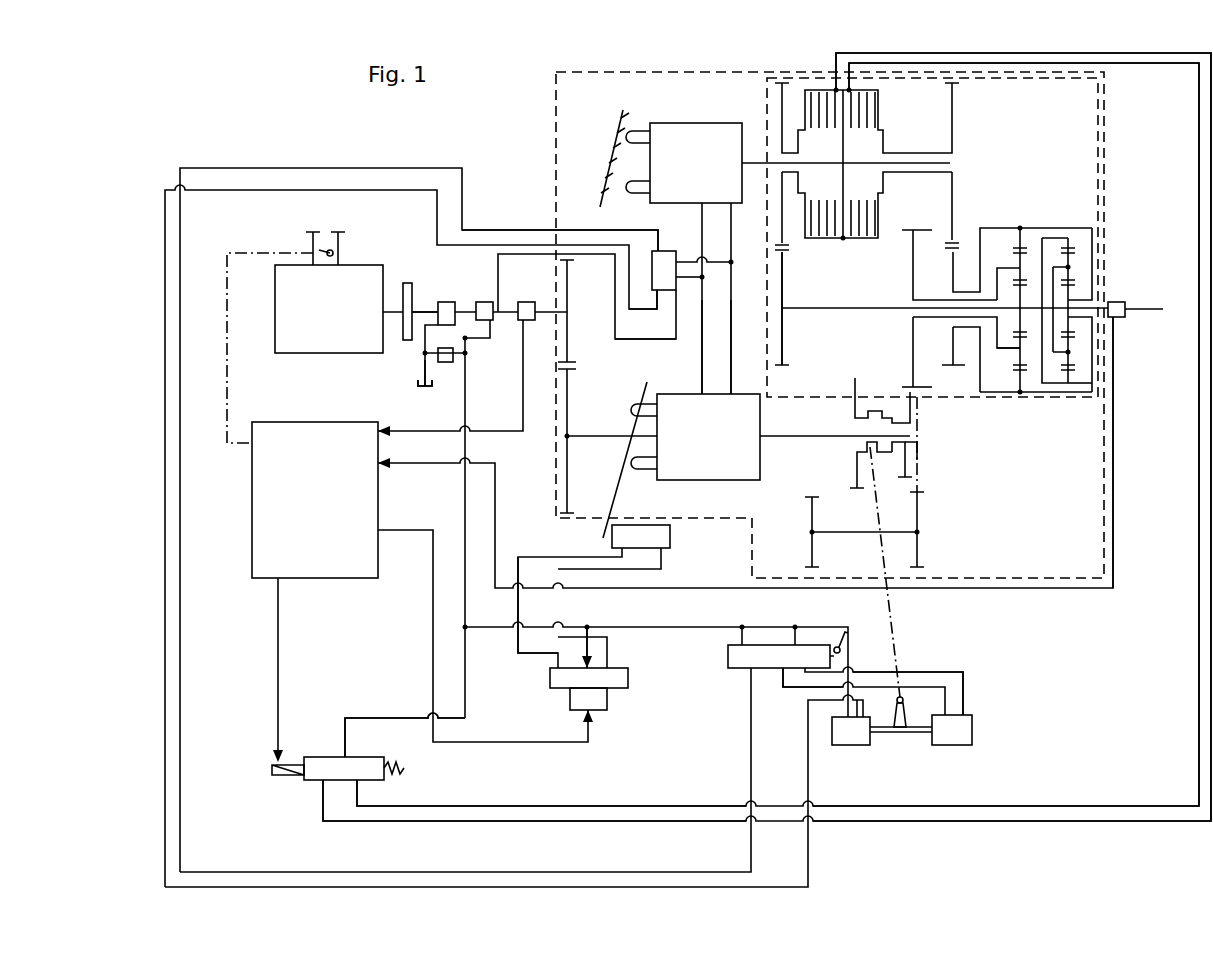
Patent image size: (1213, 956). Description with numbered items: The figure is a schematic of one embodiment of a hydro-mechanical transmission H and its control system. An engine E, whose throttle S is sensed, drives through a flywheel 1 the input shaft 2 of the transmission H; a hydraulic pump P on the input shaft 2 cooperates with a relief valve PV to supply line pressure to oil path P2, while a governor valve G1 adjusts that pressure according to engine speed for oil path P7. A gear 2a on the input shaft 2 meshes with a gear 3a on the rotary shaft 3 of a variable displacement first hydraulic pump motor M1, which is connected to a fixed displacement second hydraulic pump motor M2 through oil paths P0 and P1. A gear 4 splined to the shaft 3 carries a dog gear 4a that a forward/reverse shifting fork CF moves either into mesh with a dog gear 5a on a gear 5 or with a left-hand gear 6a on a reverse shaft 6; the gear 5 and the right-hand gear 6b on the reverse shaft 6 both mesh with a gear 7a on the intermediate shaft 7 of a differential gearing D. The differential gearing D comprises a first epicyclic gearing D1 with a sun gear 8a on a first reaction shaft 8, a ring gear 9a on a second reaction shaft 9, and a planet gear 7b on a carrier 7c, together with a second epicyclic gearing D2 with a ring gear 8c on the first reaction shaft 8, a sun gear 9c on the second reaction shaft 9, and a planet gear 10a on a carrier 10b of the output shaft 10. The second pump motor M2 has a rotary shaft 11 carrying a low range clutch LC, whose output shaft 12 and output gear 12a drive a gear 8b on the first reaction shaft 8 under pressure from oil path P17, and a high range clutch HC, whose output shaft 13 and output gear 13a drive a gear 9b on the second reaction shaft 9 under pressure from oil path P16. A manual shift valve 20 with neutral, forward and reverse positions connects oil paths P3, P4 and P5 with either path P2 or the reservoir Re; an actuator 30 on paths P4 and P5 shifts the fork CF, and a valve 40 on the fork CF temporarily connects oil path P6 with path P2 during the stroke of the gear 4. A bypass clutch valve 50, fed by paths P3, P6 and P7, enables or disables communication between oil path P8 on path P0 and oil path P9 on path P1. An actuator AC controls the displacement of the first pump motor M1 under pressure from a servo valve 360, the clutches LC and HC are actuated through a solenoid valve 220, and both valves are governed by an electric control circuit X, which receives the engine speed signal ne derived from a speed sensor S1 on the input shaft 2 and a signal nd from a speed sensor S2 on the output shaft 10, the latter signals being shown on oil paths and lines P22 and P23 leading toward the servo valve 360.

The flywheel 1 is at (406, 283).
The input shaft 2 is at (425, 311).
The rotary shaft 3 is at (596, 436).
The gear 4 is at (850, 485).
The gear 5 is at (905, 480).
The reverse shaft 6 is at (852, 532).
The intermediate shaft 7 is at (930, 317).
The first reaction shaft 8 is at (873, 308).
The second reaction shaft 9 is at (958, 327).
The output shaft 10 is at (1158, 309).
The rotary shaft 11 is at (945, 158).
The output shaft 12 is at (800, 175).
The output shaft 13 is at (908, 170).
The manual shift valve 20 is at (788, 651).
The actuator 30 is at (921, 730).
The valve 40 is at (851, 731).
The bypass clutch valve 50 is at (664, 251).
The solenoid valve 220 is at (338, 769).
The servo valve 360 is at (607, 705).
The gear 2a is at (574, 362).
The gear 3a is at (576, 369).
The dog gear 4a is at (882, 408).
The dog gear 5a is at (917, 448).
The left-hand gear 6a is at (805, 566).
The right-hand gear 6b is at (925, 498).
The gear 7a is at (905, 385).
The planet gear 7b is at (1012, 366).
The carrier 7c is at (1003, 268).
The sun gear 8a is at (990, 292).
The gear 8b is at (786, 268).
The ring gear 8c is at (1068, 383).
The ring gear 9a is at (1020, 380).
The gear 9b is at (948, 253).
The sun gear 9c is at (1078, 332).
The planet gear 10a is at (1075, 253).
The carrier 10b is at (1078, 365).
The output gear 12a is at (790, 248).
The output gear 13a is at (958, 244).
The engine E is at (340, 323).
The electric control circuit X is at (324, 515).
The engine throttle S is at (340, 244).
The hydraulic pump P is at (447, 302).
The governor valve G1 is at (484, 302).
The speed sensor S1 is at (530, 320).
The speed sensor S2 is at (1125, 306).
The relief valve PV is at (446, 362).
The reservoir Re is at (420, 374).
The first hydraulic pump motor M1 is at (721, 450).
The second hydraulic pump motor M2 is at (711, 177).
The low range clutch LC is at (822, 110).
The high range clutch HC is at (878, 105).
The actuator AC is at (641, 537).
The forward/reverse shifting fork CF is at (904, 700).
The hydro-mechanical transmission H is at (556, 150).
The differential gearing D is at (988, 397).
The first epicyclic gearing D1 is at (1020, 228).
The second epicyclic gearing D2 is at (1062, 230).
The engine speed potential ne is at (392, 419).
The drive speed signal nd is at (392, 450).
The oil path P0 is at (715, 347).
The oil path P1 is at (731, 340).
The oil path P2 is at (383, 718).
The oil path P3 is at (583, 230).
The oil path P4 is at (783, 687).
The oil path P5 is at (925, 672).
The oil path P6 is at (644, 313).
The oil path P7 is at (650, 341).
The oil path P8 is at (704, 290).
The oil path P9 is at (731, 262).
The oil path P16 is at (482, 806).
The oil path P17 is at (552, 821).
The conductor P22 is at (518, 653).
The conductor P23 is at (607, 645).